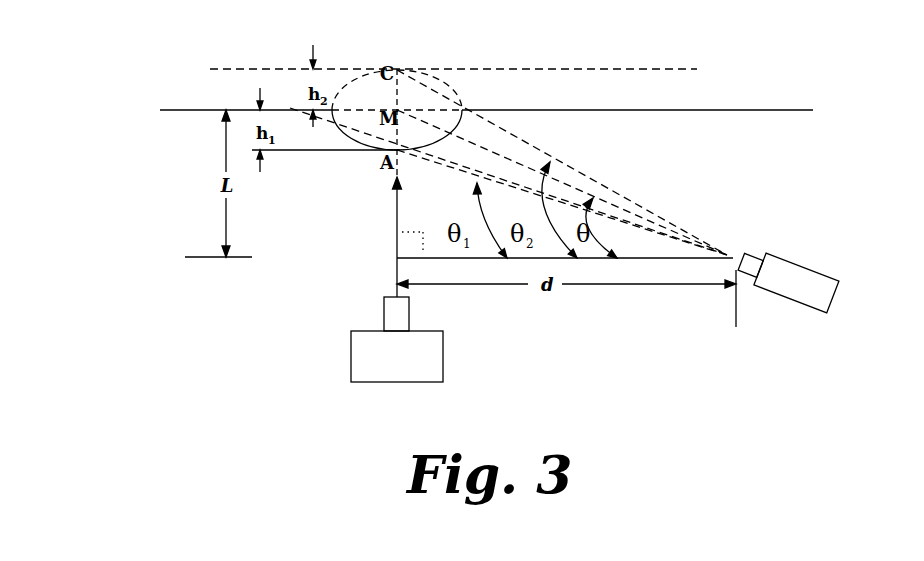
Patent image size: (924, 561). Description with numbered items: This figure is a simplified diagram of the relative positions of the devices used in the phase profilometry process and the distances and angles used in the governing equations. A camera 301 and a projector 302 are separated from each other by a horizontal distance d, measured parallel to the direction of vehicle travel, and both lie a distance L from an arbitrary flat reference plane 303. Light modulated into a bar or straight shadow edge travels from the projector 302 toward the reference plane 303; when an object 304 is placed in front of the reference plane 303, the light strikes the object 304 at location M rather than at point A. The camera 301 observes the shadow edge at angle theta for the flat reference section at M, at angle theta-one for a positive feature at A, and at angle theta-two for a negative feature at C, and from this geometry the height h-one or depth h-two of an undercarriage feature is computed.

The camera 301 is at (802, 305).
The projector 302 is at (351, 378).
The reference plane 303 is at (813, 110).
The object 304 is at (461, 119).